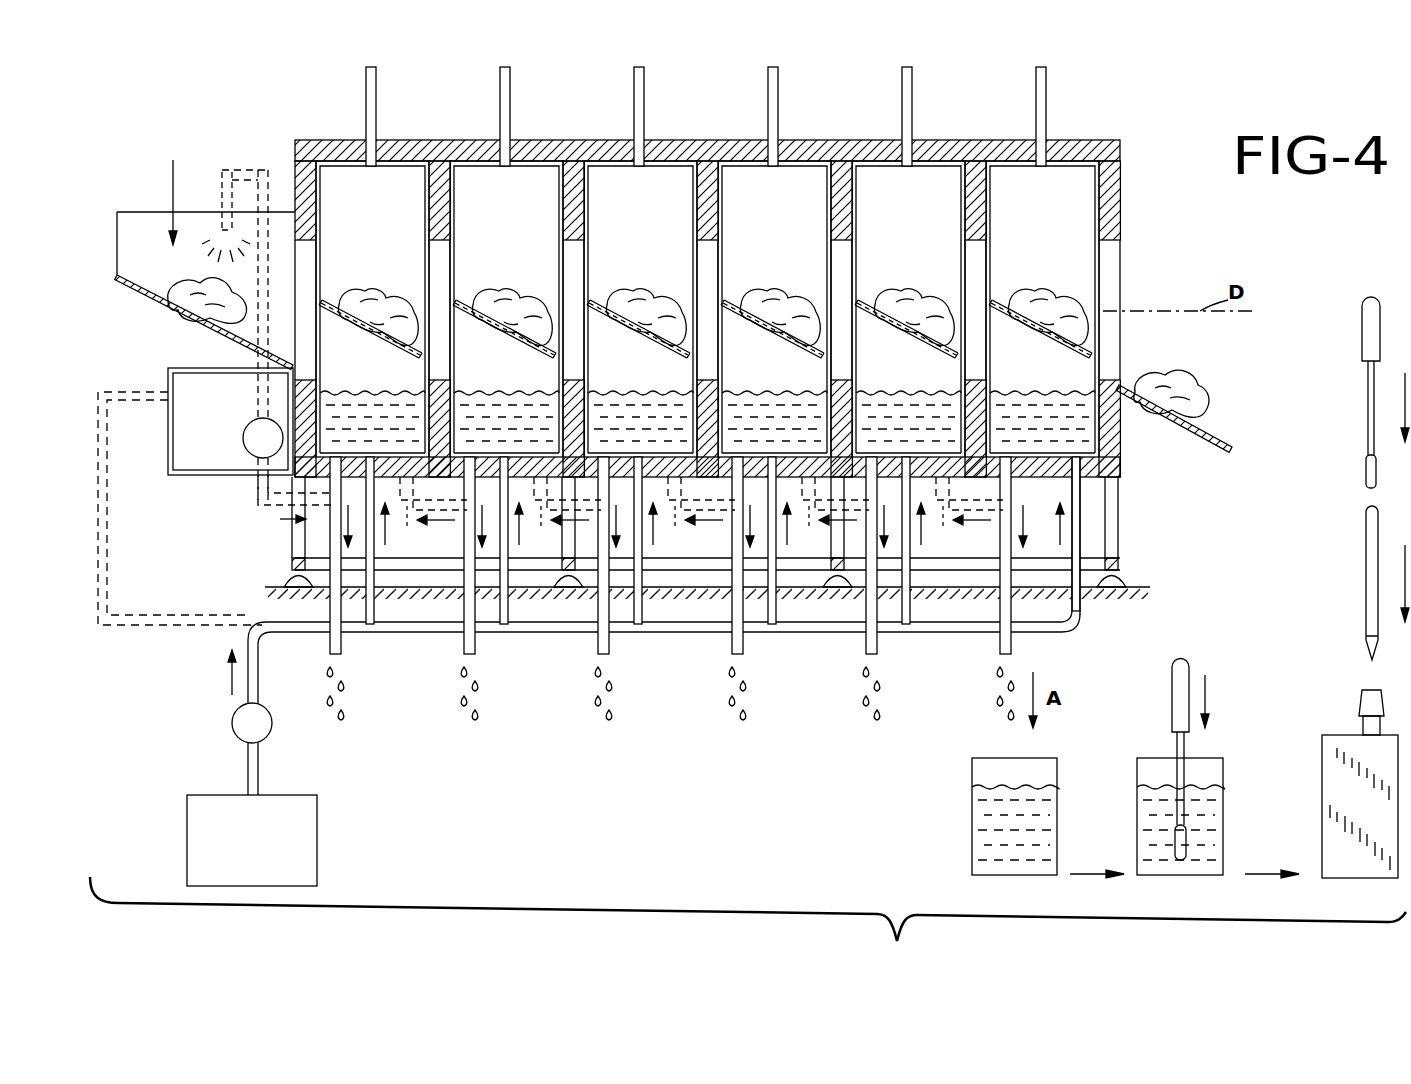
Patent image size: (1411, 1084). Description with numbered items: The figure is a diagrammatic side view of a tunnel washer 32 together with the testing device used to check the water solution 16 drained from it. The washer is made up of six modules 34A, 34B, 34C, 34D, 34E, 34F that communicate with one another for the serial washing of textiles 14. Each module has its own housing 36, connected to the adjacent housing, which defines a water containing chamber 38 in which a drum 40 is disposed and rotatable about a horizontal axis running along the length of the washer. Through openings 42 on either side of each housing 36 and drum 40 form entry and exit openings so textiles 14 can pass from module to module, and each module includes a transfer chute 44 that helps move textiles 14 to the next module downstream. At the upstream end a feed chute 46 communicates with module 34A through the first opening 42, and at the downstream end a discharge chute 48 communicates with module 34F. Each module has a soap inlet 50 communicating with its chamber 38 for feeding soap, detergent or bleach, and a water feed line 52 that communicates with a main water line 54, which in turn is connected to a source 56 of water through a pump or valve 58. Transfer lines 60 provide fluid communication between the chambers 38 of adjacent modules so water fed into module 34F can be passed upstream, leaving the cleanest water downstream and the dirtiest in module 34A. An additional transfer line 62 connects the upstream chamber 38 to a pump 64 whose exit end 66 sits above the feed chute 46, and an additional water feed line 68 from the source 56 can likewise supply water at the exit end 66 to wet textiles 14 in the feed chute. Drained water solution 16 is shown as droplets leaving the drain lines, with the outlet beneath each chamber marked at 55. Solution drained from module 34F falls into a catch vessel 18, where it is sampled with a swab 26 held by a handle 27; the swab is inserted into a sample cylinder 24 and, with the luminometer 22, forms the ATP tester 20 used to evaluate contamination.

The textiles 14 is at (190, 297).
The water solution 16 is at (880, 726).
The catch vessel 18 is at (972, 810).
The ATP tester 20 is at (1320, 784).
The luminometer 22 is at (1322, 772).
The sample cylinder 24 is at (1366, 570).
The swab 26 is at (1366, 470).
The handle 27 is at (1362, 323).
The tunnel washer 32 is at (284, 116).
The first module 34A is at (412, 103).
The second module 34B is at (546, 103).
The third module 34C is at (679, 103).
The fourth module 34D is at (814, 103).
The fifth module 34E is at (947, 103).
The sixth module 34F is at (1081, 103).
The housing 36 is at (707, 326).
The water containing chamber 38 is at (707, 309).
The drum 40 is at (740, 319).
The through openings 42 is at (1120, 256).
The transfer chute 44 is at (705, 338).
The feed chute 46 is at (133, 212).
The discharge chute 48 is at (1180, 425).
The soap inlet 50 is at (685, 109).
The water feed line 52 is at (1082, 528).
The main water line 54 is at (265, 622).
The drain 55 is at (868, 657).
The source of water 56 is at (187, 840).
The pump or valve 58 is at (232, 722).
The transfer lines 60 is at (697, 516).
The transfer line 62 is at (258, 493).
The pump 64 is at (180, 433).
The exit end 66 is at (268, 210).
The additional water feed line 68 is at (107, 560).